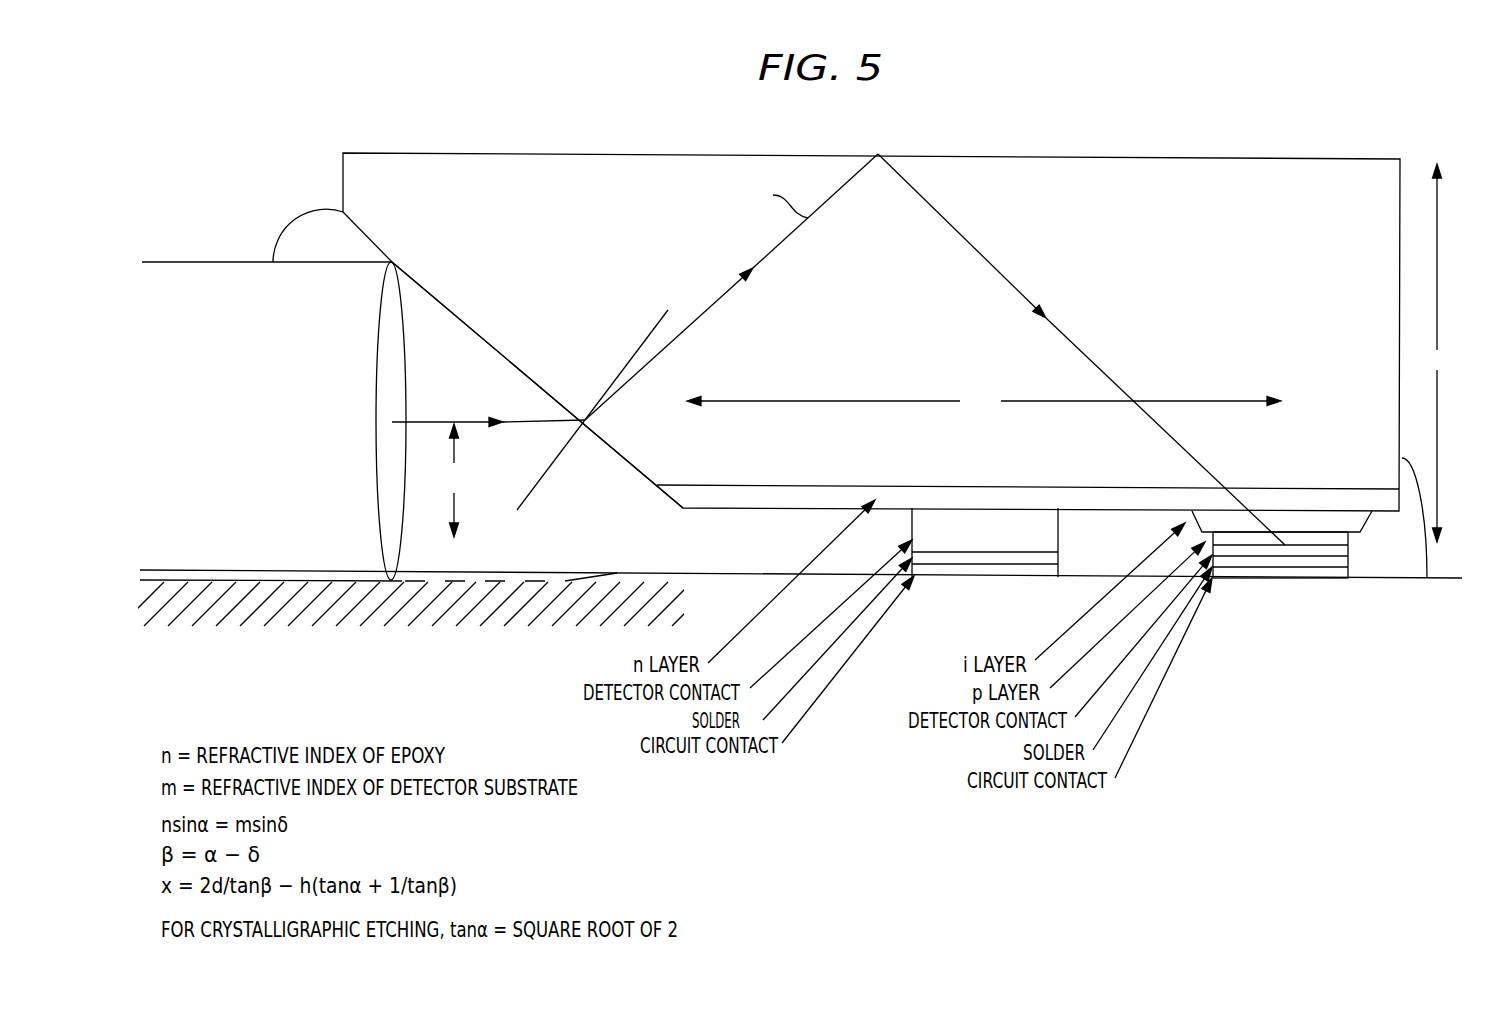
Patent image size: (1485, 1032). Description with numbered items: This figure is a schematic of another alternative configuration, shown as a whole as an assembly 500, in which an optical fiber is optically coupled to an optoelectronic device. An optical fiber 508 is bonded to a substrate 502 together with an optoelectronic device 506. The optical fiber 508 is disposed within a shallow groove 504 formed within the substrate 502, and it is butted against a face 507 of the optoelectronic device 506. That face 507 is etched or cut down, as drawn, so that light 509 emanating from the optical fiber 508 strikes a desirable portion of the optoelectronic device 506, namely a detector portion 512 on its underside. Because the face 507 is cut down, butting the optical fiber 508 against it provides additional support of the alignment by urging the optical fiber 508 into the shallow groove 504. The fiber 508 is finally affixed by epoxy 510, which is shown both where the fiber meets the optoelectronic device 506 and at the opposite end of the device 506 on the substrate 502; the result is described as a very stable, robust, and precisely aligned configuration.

The optical detector assembly 500 is at (857, 126).
The substrate 502 is at (230, 617).
The shallow groove 504 is at (436, 581).
The optoelectronic device 506 is at (1212, 158).
The face 507 is at (475, 327).
The optical fiber 508 is at (200, 273).
The light 509 is at (470, 420).
The epoxy 510 is at (315, 223).
The detector portion 512 is at (1372, 520).